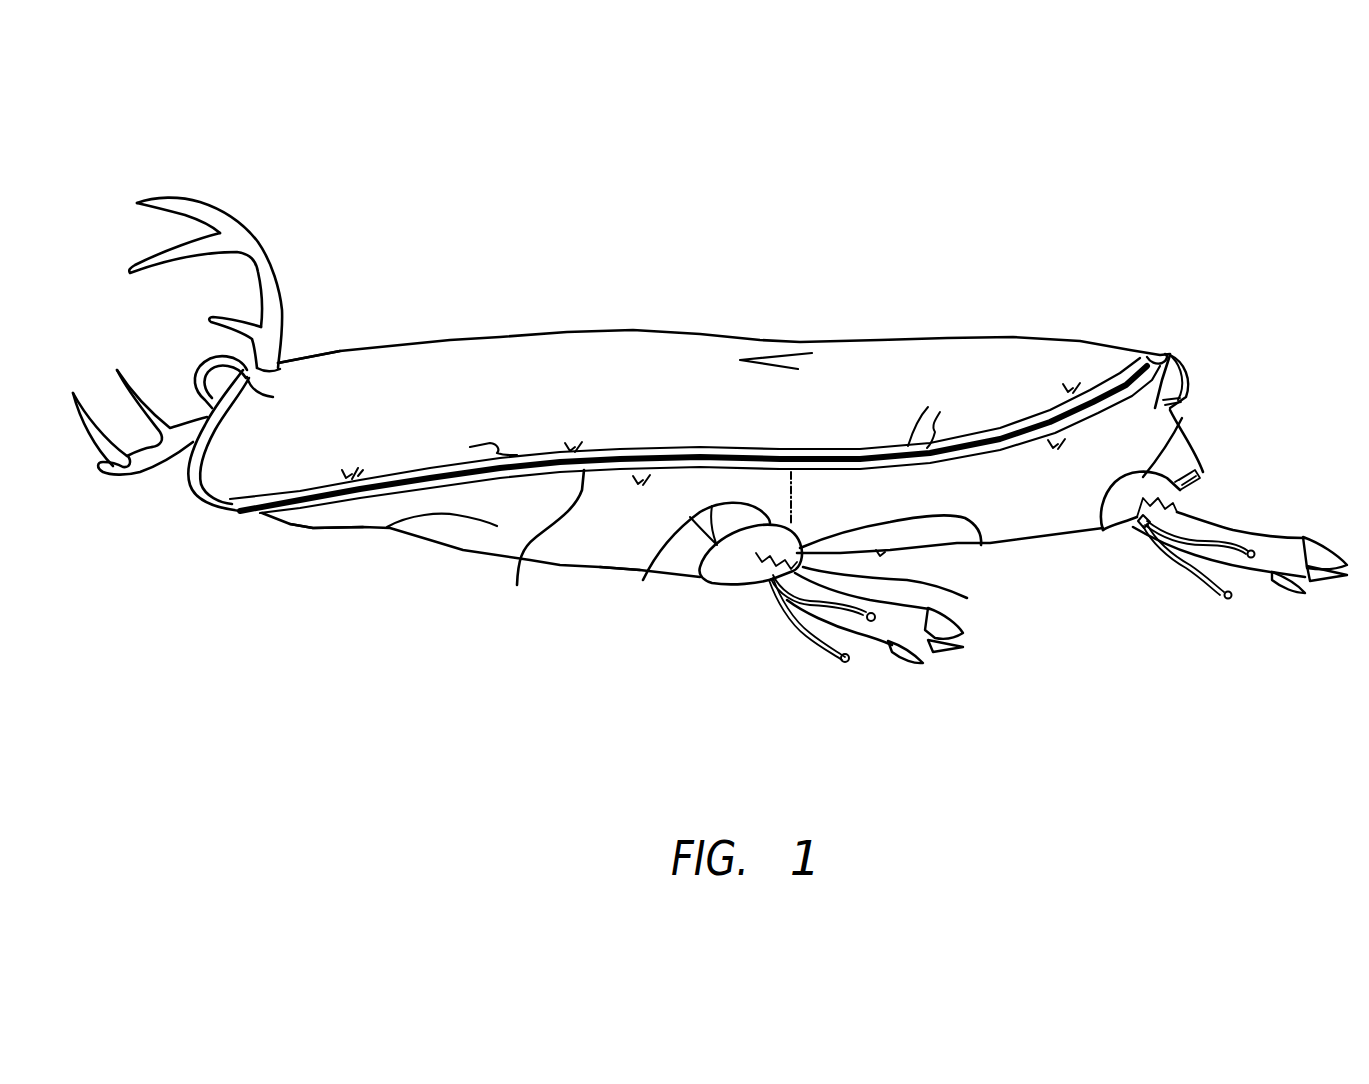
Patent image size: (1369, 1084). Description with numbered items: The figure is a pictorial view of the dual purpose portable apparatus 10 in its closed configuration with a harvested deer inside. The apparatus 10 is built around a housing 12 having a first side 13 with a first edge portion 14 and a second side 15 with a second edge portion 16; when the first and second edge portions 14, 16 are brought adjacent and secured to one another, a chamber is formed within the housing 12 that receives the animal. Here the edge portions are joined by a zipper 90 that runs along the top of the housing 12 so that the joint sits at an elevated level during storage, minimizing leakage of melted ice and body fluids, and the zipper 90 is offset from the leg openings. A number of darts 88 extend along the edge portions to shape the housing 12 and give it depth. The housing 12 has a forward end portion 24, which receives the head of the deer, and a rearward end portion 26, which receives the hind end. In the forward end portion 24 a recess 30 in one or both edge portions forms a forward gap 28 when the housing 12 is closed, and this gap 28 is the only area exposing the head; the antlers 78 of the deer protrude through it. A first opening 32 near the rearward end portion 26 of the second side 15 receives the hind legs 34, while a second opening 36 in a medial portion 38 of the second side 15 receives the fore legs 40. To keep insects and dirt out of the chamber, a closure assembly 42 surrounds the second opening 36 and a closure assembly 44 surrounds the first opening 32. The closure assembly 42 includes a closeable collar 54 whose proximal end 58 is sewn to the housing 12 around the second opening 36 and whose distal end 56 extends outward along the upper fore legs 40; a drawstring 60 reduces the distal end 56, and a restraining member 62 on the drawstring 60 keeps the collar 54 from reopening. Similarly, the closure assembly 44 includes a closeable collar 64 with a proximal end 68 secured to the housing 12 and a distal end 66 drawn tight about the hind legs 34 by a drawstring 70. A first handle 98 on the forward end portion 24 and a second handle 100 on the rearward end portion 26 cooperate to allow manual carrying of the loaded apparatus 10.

The dual purpose portable apparatus 10 is at (1022, 287).
The housing 12 is at (590, 348).
The first side 13 is at (510, 347).
The first edge portion 14 is at (672, 447).
The second side 15 is at (480, 537).
The second edge portion 16 is at (517, 585).
The forward end portion 24 is at (313, 350).
The rearward end portion 26 is at (1170, 355).
The forward gap 28 is at (301, 339).
The recess 30 is at (280, 355).
The first opening 32 is at (1147, 523).
The hind legs 34 is at (1213, 534).
The second opening 36 is at (790, 588).
The medial portion 38 is at (632, 569).
The fore legs 40 is at (960, 594).
The closure assembly 42 is at (697, 619).
The closure assembly 44 is at (1195, 472).
The closeable collar 54 is at (707, 580).
The distal end 56 is at (981, 547).
The proximal end 58 is at (643, 580).
The drawstring 60 is at (857, 644).
The restraining member 62 is at (775, 592).
The closeable collar 64 is at (1173, 488).
The distal end 66 is at (1183, 513).
The proximal end 68 is at (1182, 418).
The drawstring 70 is at (1220, 582).
The antlers 78 is at (223, 207).
The dart 88 is at (792, 513).
The zipper 90 is at (355, 497).
The first handle 98 is at (197, 365).
The second handle 100 is at (1190, 378).